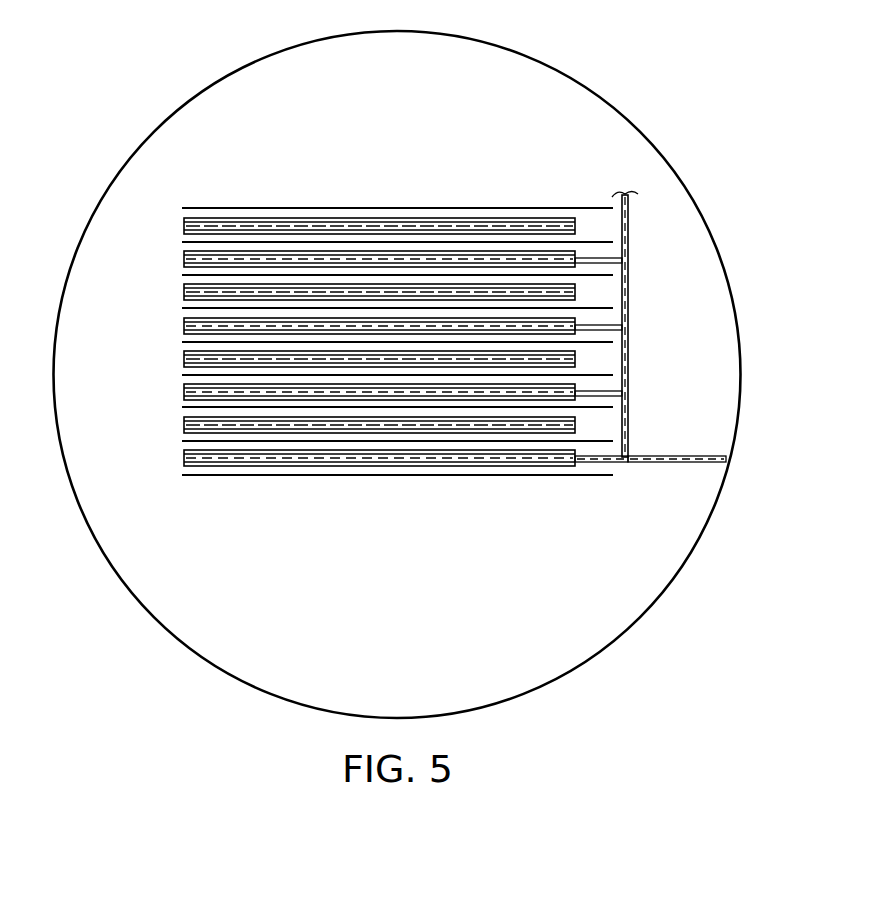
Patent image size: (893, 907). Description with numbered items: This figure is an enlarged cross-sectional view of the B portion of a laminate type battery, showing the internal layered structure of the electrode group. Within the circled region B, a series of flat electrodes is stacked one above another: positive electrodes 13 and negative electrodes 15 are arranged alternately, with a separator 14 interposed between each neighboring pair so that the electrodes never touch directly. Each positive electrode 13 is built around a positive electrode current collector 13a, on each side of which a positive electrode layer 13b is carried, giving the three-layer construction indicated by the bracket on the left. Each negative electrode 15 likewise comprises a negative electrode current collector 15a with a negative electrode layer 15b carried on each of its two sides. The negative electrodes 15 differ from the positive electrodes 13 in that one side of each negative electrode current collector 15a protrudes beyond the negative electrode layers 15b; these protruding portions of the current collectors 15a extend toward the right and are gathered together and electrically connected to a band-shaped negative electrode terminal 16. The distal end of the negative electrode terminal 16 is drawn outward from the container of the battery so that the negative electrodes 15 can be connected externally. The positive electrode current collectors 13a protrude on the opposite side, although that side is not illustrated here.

The positive electrode 13 is at (318, 348).
The positive electrode current collector 13a is at (188, 426).
The positive electrode layer 13b is at (188, 418).
The separator 14 is at (452, 207).
The negative electrode 15 is at (395, 373).
The negative electrode current collector 15a is at (600, 262).
The negative electrode layer 15b is at (190, 452).
The negative electrode terminal 16 is at (677, 463).
The B portion B is at (628, 623).